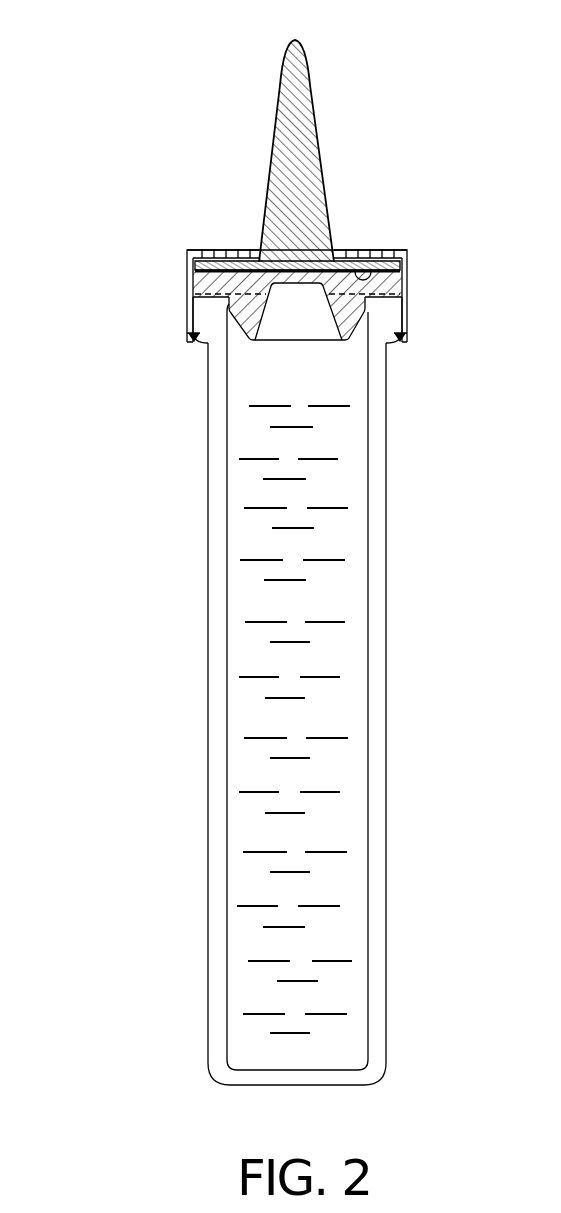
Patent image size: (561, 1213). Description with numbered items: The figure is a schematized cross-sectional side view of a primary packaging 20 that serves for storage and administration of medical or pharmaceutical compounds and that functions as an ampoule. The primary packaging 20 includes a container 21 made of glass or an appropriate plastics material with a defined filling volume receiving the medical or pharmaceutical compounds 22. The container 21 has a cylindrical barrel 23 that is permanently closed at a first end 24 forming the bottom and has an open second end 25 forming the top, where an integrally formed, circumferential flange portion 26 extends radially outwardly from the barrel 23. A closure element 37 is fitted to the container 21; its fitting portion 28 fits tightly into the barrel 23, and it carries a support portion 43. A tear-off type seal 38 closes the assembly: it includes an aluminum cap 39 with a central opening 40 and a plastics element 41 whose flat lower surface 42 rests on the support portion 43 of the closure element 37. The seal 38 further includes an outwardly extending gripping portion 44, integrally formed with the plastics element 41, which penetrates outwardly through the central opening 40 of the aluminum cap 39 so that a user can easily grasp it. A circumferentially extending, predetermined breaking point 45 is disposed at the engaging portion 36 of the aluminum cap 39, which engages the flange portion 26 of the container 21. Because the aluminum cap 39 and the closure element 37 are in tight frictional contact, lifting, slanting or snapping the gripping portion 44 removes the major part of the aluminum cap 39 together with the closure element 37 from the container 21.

The primary packaging 20 is at (388, 92).
The container 21 is at (149, 471).
The medical or pharmaceutical compounds 22 is at (331, 559).
The cylindrical barrel 23 is at (386, 588).
The first end 24 is at (336, 1070).
The open second end 25 is at (176, 269).
The flange portion 26 is at (392, 315).
The fitting portion 28 is at (340, 316).
The engaging portion 36 is at (393, 344).
The closure element 37 is at (396, 283).
The tear-off type seal 38 is at (406, 222).
The aluminum cap 39 is at (373, 250).
The central opening 40 is at (255, 244).
The plastics element 41 is at (210, 262).
The flat lower surface 42 is at (395, 250).
The support portion 43 is at (273, 285).
The gripping portion 44 is at (302, 183).
The predetermined breaking point 45 is at (188, 340).